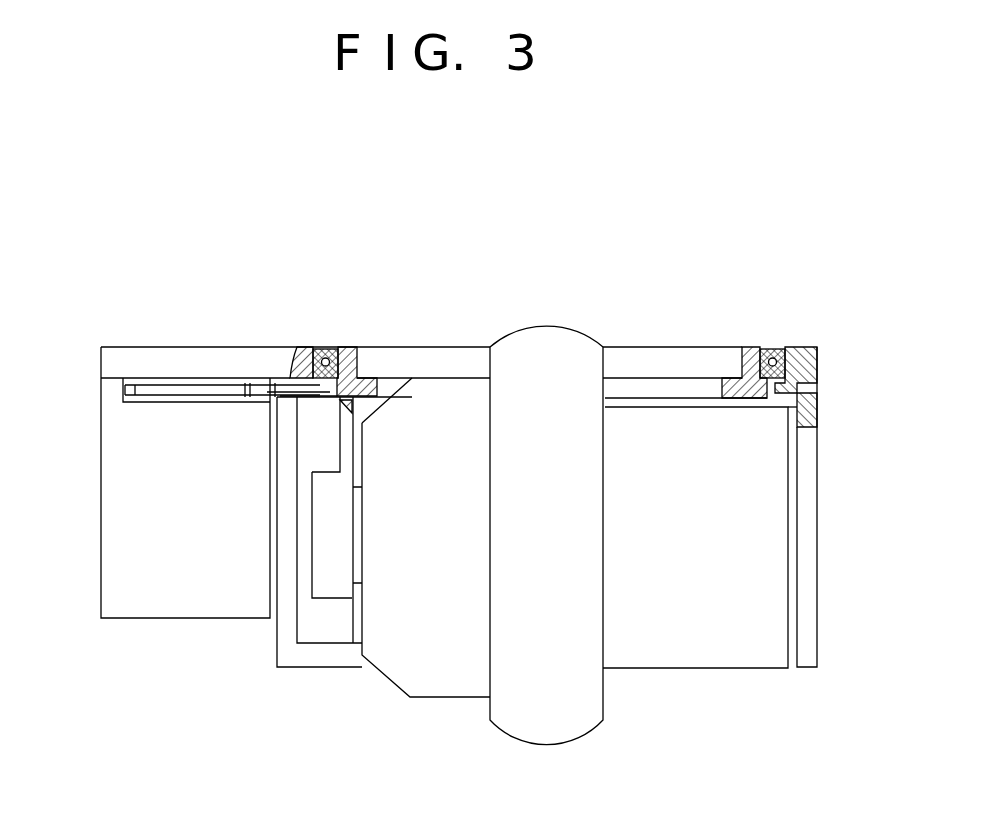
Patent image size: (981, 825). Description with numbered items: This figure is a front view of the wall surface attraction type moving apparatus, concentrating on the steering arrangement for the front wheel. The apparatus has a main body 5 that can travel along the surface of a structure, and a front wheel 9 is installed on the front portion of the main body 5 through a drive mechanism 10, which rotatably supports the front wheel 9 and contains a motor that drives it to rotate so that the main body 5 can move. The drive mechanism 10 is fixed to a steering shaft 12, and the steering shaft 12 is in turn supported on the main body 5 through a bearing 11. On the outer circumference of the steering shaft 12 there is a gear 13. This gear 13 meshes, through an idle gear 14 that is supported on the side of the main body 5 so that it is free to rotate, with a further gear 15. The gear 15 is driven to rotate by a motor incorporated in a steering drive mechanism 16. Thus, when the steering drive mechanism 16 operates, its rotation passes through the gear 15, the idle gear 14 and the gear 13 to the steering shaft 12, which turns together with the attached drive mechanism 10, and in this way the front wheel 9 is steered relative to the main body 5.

The main body 5 is at (280, 347).
The front wheel 9 is at (557, 328).
The drive mechanism 10 is at (670, 668).
The bearing 11 is at (775, 347).
The steering shaft 12 is at (752, 347).
The gear 13 is at (818, 394).
The idle gear 14 is at (255, 383).
The gear 15 is at (148, 383).
The steering drive mechanism 16 is at (100, 470).